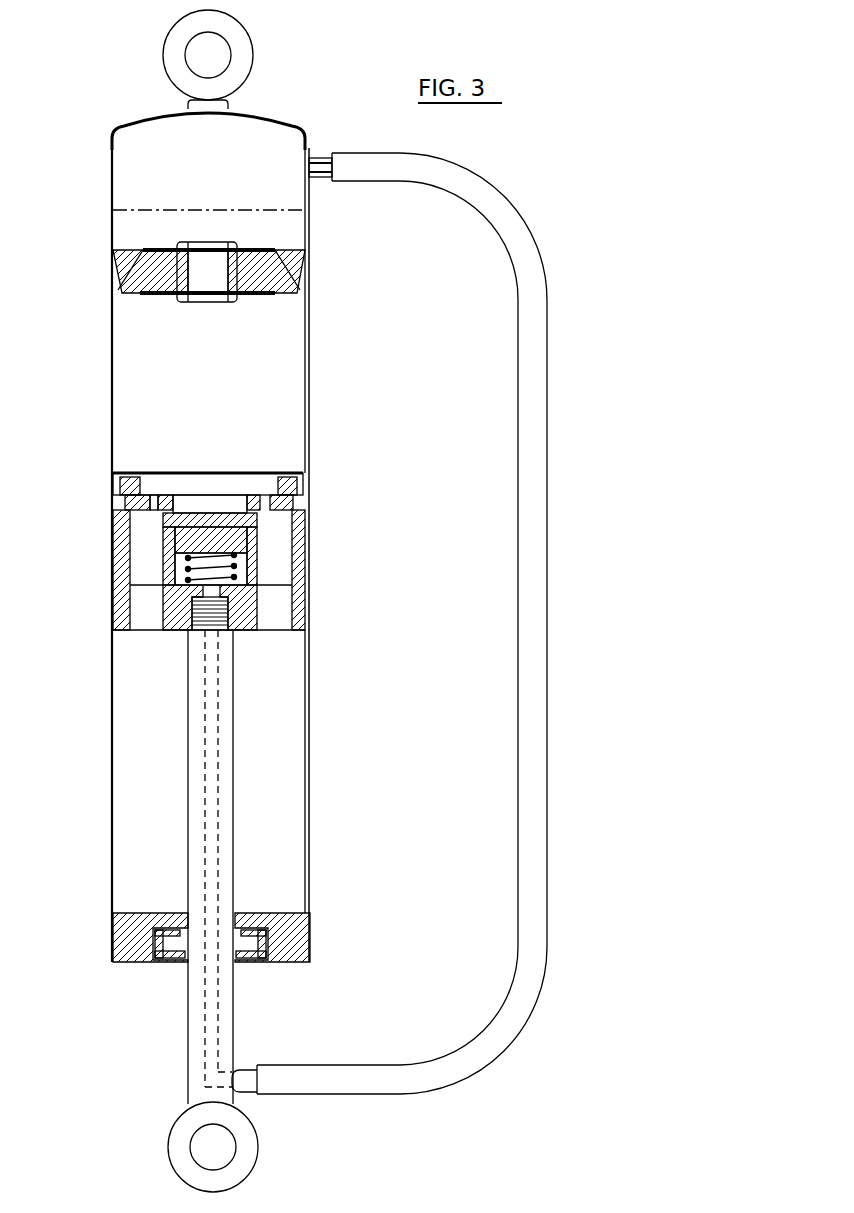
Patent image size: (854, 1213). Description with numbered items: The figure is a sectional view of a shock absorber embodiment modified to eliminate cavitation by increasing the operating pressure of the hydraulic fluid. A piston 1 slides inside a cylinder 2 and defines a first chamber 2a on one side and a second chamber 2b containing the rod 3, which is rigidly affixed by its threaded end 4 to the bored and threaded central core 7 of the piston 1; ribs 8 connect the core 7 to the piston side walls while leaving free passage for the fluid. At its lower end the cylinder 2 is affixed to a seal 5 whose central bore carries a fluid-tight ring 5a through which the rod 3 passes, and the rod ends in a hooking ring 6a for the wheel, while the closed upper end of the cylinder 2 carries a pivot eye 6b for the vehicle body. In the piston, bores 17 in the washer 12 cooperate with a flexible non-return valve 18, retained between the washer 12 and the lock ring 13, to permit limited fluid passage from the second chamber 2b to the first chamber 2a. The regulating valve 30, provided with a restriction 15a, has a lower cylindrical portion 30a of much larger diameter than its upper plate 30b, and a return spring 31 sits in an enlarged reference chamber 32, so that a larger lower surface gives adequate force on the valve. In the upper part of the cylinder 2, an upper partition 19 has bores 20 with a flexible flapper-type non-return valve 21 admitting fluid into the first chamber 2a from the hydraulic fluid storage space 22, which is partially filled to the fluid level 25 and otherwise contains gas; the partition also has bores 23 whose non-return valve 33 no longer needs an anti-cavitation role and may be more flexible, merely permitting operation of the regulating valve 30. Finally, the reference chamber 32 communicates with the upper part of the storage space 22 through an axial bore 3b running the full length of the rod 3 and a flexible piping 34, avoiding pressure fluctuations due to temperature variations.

The piston 1 is at (302, 596).
The cylinder 2 is at (316, 699).
The first chamber 2a is at (250, 396).
The second chamber 2b is at (262, 799).
The rod 3 is at (197, 762).
The axial bore 3b is at (205, 818).
The threaded end 4 is at (244, 623).
The seal 5 is at (287, 940).
The fluid-tight ring 5a is at (258, 963).
The hooking ring 6a is at (245, 1143).
The pivot eye 6b is at (247, 52).
The central core 7 is at (185, 616).
The ribs 8 is at (150, 606).
The washer 12 is at (123, 498).
The lock ring 13 is at (120, 485).
The restriction 15a is at (175, 527).
The bores 17 is at (155, 494).
The flexible non-return valve 18 is at (168, 494).
The upper partition 19 is at (246, 285).
The bores 20 is at (148, 284).
The flexible flapper-type non-return valve 21 is at (155, 296).
The hydraulic fluid storage space 22 is at (170, 184).
The bores 23 is at (290, 262).
The fluid level 25 is at (216, 209).
The regulating valve 30 is at (217, 504).
The lower cylindrical portion 30a is at (232, 543).
The upper plate 30b is at (258, 522).
The return spring 31 is at (246, 578).
The reference chamber 32 is at (185, 575).
The non-return valve 33 is at (270, 249).
The flexible piping 34 is at (526, 291).